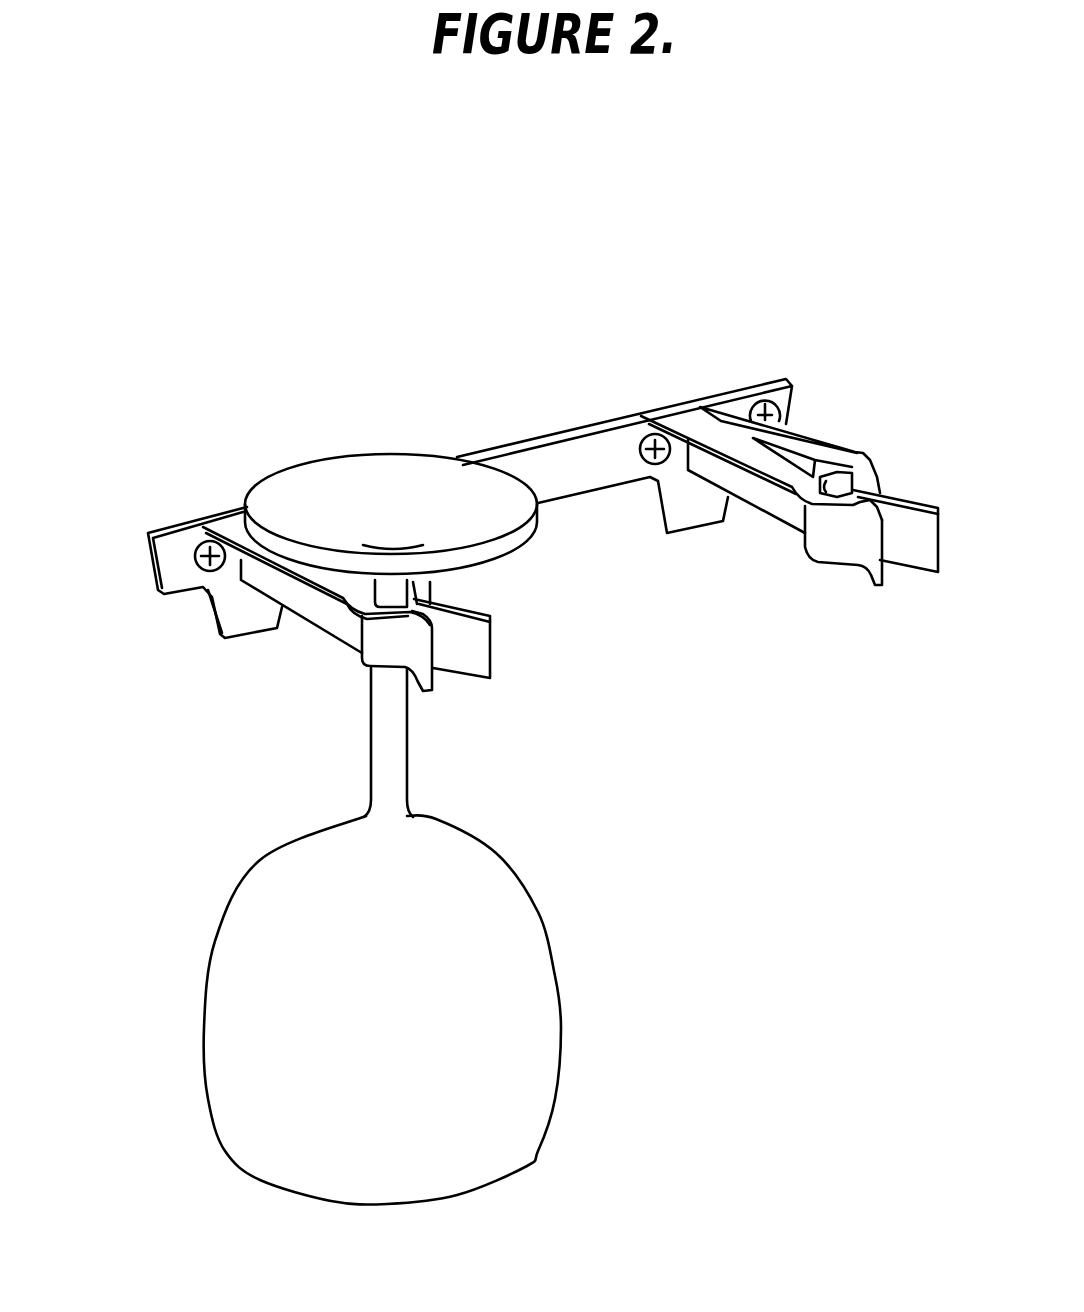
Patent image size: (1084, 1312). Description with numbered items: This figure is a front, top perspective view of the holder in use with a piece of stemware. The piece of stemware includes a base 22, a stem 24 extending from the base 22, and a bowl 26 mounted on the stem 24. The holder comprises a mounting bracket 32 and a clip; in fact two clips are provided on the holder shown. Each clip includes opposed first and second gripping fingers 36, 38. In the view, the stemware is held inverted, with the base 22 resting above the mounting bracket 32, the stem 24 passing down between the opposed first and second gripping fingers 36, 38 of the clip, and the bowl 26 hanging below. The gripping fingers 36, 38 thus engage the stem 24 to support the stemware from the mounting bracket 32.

The base 22 is at (308, 480).
The mounting bracket 32 is at (550, 463).
The first gripping finger 36 is at (343, 620).
The second gripping finger 38 is at (478, 643).
The stem 24 is at (392, 755).
The bowl 26 is at (540, 1035).